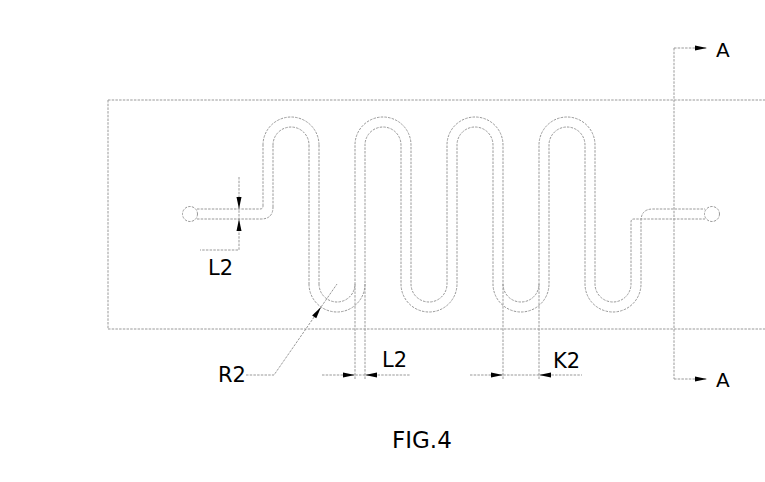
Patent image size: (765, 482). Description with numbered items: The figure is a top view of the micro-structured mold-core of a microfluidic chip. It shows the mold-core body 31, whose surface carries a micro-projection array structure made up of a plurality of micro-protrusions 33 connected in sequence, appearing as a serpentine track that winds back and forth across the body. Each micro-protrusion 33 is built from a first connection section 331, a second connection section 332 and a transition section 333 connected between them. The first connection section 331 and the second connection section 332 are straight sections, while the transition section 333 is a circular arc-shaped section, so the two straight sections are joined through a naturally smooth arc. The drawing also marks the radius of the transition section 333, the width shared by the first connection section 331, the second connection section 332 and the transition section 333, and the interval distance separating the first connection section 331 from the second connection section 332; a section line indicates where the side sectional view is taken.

The mold-core body 31 is at (153, 155).
The micro-protrusion 33 is at (451, 159).
The first connection section 331 is at (263, 150).
The second connection section 332 is at (313, 157).
The transition section 333 is at (291, 121).